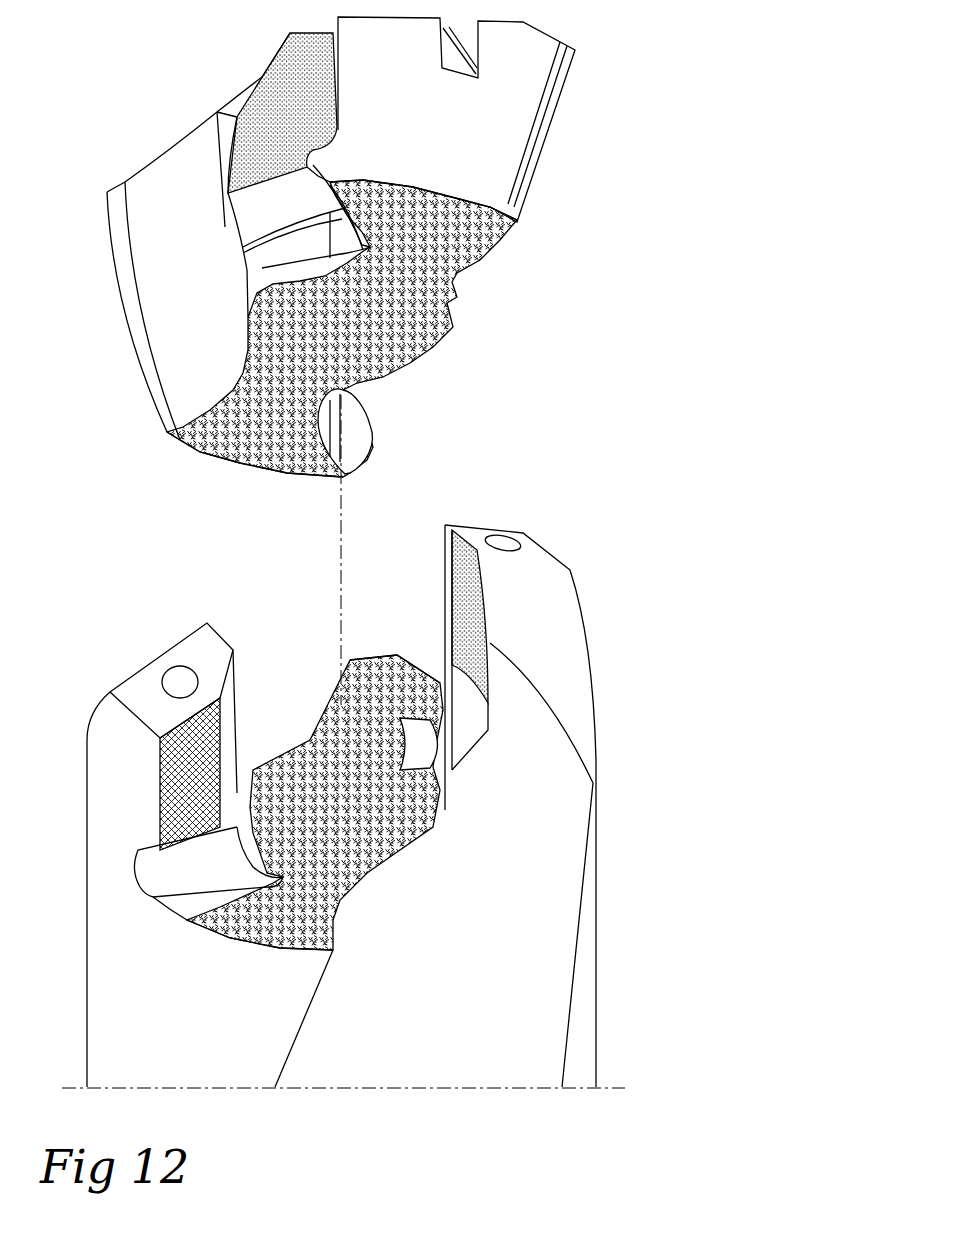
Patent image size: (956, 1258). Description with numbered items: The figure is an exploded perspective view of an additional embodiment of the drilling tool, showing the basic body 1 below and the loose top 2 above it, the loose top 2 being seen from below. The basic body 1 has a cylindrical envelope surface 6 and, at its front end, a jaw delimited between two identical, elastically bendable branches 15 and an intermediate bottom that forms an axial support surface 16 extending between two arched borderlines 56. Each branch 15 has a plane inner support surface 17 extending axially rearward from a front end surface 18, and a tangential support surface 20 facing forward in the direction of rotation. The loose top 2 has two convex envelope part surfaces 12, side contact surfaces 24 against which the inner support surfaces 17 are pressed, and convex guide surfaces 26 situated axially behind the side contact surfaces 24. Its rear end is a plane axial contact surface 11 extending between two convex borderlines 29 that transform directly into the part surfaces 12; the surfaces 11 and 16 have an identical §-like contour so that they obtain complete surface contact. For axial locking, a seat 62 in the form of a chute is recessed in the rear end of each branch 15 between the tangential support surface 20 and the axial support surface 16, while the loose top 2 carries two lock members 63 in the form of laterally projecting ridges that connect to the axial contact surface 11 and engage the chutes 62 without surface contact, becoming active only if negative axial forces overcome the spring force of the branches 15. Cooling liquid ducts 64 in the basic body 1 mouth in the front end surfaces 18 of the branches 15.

The basic body 1 is at (616, 872).
The loose top 2 is at (578, 125).
The cylindrical envelope surface 6 is at (152, 1032).
The axial contact surface 11 is at (267, 397).
The convex part surfaces 12 is at (422, 132).
The branches 15 is at (572, 627).
The axial support surface 16 is at (355, 822).
The inner support surface 17 is at (450, 644).
The front end surface 18 is at (198, 667).
The tangential support surface 20 is at (175, 797).
The side contact surfaces 24 is at (275, 112).
The convex guide surfaces 26 is at (285, 250).
The convex borderlines 29 is at (380, 182).
The arched borderlines 56 is at (397, 658).
The seat 62 is at (155, 880).
The lock member 63 is at (325, 160).
The cooling liquid ducts 64 is at (182, 680).